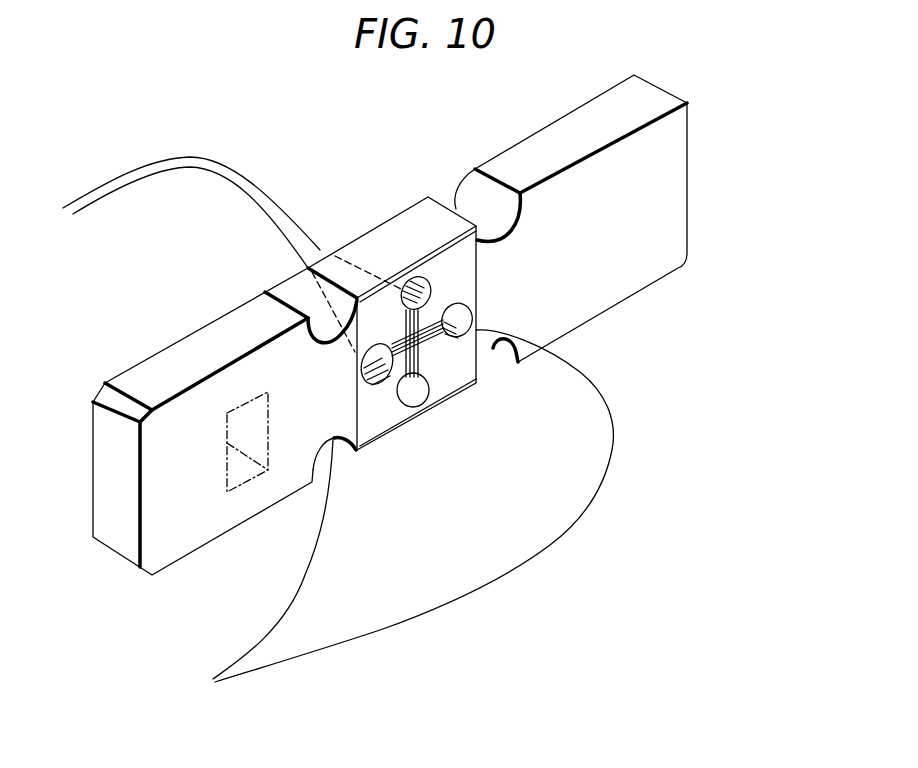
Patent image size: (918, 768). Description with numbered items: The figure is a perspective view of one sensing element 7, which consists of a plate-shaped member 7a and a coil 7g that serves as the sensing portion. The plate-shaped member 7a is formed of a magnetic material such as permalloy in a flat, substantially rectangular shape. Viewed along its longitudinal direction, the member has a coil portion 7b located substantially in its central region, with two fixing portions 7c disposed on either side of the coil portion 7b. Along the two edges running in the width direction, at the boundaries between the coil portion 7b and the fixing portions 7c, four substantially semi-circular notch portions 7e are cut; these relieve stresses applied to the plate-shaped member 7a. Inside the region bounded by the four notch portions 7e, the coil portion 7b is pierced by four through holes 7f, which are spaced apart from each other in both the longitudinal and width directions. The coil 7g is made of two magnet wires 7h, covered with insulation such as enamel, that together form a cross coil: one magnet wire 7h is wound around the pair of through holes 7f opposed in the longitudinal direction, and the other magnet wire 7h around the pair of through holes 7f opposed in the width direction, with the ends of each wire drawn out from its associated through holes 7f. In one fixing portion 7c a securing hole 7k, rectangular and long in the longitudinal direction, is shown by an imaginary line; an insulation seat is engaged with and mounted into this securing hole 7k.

The sensing element 7 is at (708, 204).
The plate-shaped member 7a is at (687, 138).
The coil portion 7b is at (363, 248).
The fixing portion 7c is at (180, 352).
The notch portion 7e is at (475, 172).
The through hole 7f is at (447, 306).
The coil 7g is at (464, 312).
The magnet wire 7h is at (437, 362).
The securing hole 7k is at (250, 472).